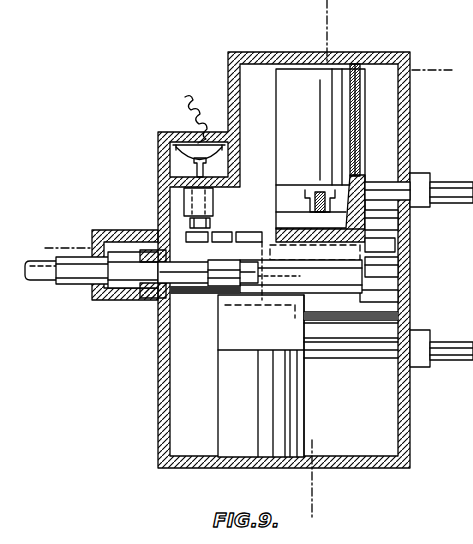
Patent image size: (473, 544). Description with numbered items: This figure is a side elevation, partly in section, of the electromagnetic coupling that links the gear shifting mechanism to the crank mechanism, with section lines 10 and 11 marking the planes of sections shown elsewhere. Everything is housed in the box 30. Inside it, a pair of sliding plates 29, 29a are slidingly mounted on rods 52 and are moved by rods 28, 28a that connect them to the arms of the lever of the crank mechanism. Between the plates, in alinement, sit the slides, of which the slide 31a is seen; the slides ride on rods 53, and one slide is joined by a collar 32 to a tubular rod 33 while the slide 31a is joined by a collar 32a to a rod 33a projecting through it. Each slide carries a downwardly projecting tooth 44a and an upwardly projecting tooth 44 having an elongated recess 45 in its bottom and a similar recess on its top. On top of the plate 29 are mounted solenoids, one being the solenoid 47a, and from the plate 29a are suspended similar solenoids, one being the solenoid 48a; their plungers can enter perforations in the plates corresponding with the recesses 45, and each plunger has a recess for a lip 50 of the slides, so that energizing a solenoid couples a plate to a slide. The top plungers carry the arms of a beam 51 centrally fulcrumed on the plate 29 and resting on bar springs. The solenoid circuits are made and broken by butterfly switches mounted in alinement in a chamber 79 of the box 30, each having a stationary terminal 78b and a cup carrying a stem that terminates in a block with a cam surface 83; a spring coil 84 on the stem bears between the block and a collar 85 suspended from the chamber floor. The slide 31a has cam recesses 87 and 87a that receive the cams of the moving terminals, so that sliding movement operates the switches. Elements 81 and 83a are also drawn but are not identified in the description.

The section line 10— 10 is at (330, 260).
The section line 11— 11 is at (246, 156).
The rod 28 is at (450, 185).
The rod 28a is at (445, 358).
The sliding plate 29 is at (362, 182).
The sliding plate 29a is at (310, 350).
The box 30 is at (410, 440).
The slide 31a is at (301, 276).
The collar 32 is at (152, 300).
The collar 32a is at (222, 302).
The tubular rod 33 is at (82, 284).
The rod 33a is at (46, 282).
The upwardly projecting tooth 44 is at (240, 232).
The downwardly projecting tooth 44a is at (372, 302).
The elongated recess 45 is at (320, 208).
The solenoid 47a is at (356, 76).
The solenoid 48a is at (262, 440).
The lip 50 is at (328, 273).
The beam 51 is at (315, 192).
The rods 52 is at (392, 217).
The rods 53 is at (392, 262).
The stationary terminal 78b is at (212, 143).
The chamber 79 is at (178, 160).
The stem 81 is at (198, 168).
The cam surface 83 is at (222, 242).
The valve seat 83a is at (197, 242).
The spring coil 84 is at (190, 223).
The collar 85 is at (184, 201).
The cam recess 87 is at (134, 256).
The cam recess 87a is at (262, 242).